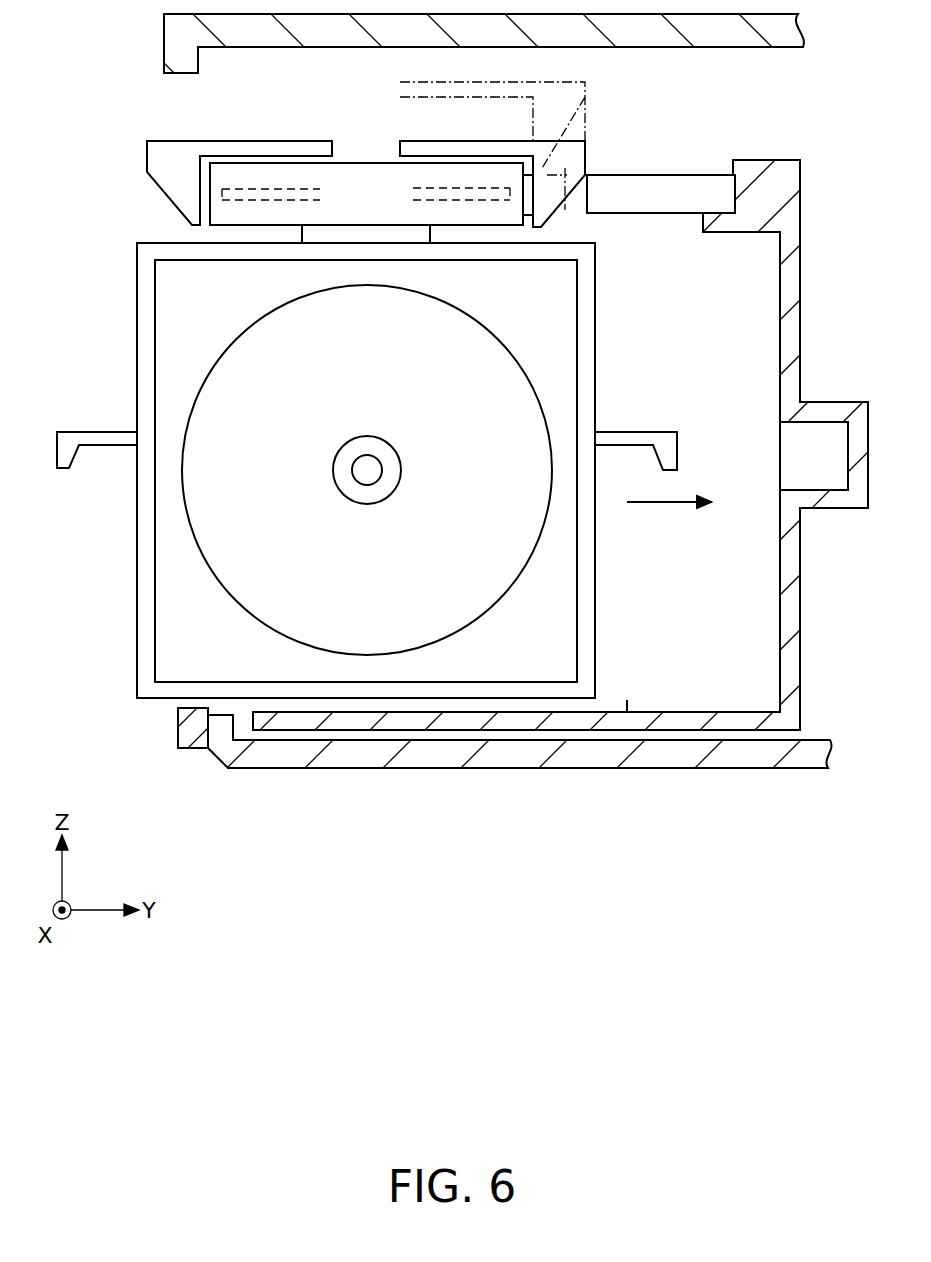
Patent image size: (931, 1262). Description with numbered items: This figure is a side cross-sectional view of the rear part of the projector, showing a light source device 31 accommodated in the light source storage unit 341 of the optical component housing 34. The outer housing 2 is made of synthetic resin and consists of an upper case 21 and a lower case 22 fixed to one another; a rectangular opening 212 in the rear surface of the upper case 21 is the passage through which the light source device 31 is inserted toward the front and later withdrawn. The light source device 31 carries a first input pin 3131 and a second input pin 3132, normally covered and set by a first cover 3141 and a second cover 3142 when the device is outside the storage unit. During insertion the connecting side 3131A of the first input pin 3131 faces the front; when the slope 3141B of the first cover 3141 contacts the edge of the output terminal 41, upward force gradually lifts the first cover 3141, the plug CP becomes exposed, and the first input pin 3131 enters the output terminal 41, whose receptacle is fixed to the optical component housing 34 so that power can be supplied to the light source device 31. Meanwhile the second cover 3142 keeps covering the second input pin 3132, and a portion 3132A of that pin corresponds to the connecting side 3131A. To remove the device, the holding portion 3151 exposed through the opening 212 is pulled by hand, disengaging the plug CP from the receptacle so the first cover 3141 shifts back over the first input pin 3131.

The outer housing 2 is at (142, 833).
The upper case 21 is at (190, 732).
The opening 212 is at (195, 707).
The lower case 22 is at (223, 748).
The light source device 31 is at (90, 262).
The first input pin 3131 is at (455, 173).
The connecting side 3131A is at (524, 192).
The second input pin 3132 is at (265, 177).
The second contact portion 3132A is at (209, 188).
The first cover 3141 is at (577, 147).
The slope 3141B is at (578, 185).
The second cover 3142 is at (175, 152).
The holding portion 3151 is at (70, 440).
The optical component housing 34 is at (452, 724).
The light source storage unit 341 is at (641, 708).
The output terminal 41 is at (560, 207).
The plug CP is at (447, 203).